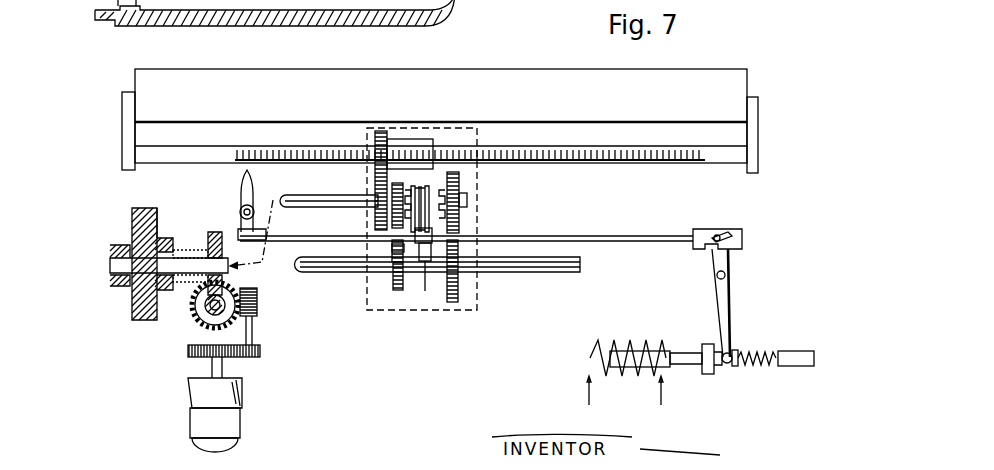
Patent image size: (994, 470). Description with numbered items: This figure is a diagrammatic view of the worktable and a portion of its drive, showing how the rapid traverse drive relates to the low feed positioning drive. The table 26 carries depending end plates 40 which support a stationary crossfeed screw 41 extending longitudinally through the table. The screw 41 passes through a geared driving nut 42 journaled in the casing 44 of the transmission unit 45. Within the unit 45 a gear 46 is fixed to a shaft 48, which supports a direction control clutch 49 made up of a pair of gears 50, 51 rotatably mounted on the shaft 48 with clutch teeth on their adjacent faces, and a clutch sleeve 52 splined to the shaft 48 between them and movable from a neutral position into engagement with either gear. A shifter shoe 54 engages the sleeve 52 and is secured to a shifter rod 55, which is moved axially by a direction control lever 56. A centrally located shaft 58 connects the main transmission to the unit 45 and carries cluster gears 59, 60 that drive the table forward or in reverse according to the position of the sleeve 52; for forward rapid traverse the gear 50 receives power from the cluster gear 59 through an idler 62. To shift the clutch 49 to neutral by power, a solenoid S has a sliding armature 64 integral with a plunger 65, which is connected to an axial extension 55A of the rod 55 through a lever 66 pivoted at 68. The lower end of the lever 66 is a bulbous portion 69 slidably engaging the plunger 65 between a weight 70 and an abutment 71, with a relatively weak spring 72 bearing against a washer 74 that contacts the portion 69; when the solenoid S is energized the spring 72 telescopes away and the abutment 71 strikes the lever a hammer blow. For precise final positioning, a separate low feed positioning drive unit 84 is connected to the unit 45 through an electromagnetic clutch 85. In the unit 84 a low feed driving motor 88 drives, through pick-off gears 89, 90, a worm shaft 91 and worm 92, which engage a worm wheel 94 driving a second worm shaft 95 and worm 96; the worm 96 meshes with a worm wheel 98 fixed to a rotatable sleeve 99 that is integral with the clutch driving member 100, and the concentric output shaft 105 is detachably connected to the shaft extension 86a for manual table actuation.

The table 26 is at (524, 72).
The depending end plates 40 is at (122, 134).
The crossfeed screw 41 is at (678, 162).
The geared driving nut 42 is at (415, 139).
The casing 44 is at (477, 198).
The transmission unit 45 is at (408, 320).
The gear 46 is at (392, 176).
The shaft 48 is at (318, 202).
The direction control clutch 49 is at (459, 223).
The gear 50 is at (393, 220).
The gear 51 is at (459, 180).
The clutch sleeve 52 is at (428, 178).
The shifter shoe 54 is at (426, 261).
The shifter rod 55 is at (302, 241).
The axial extension 55A is at (598, 236).
The direction control lever 56 is at (242, 184).
The shaft 58 is at (546, 272).
The cluster gear 59 is at (393, 290).
The cluster gear 60 is at (456, 302).
The idler 62 is at (392, 250).
The sliding armature 64 is at (638, 342).
The plunger 65 is at (686, 367).
The lever 66 is at (730, 322).
The pivot 68 is at (726, 272).
The bulbous portion 69 is at (730, 362).
The weight 70 is at (709, 374).
The abutment 71 is at (810, 366).
The spring 72 is at (768, 353).
The washer 74 is at (735, 352).
The low feed positioning drive unit 84 is at (176, 384).
The clutch 85 is at (128, 311).
The extension of manual table actuating shaft 86a is at (254, 243).
The low feed driving motor 88 is at (242, 428).
The pick-off gear 89 is at (188, 353).
The pick-off gear 90 is at (255, 356).
The worm shaft 91 is at (253, 339).
The worm 92 is at (258, 304).
The worm wheel 94 is at (200, 323).
The second worm shaft 95 is at (208, 310).
The worm 96 is at (205, 304).
The worm wheel 98 is at (212, 232).
The rotatable sleeve 99 is at (192, 252).
The driving member 100 is at (146, 218).
The output shaft 105 is at (108, 265).
The solenoid S is at (586, 368).